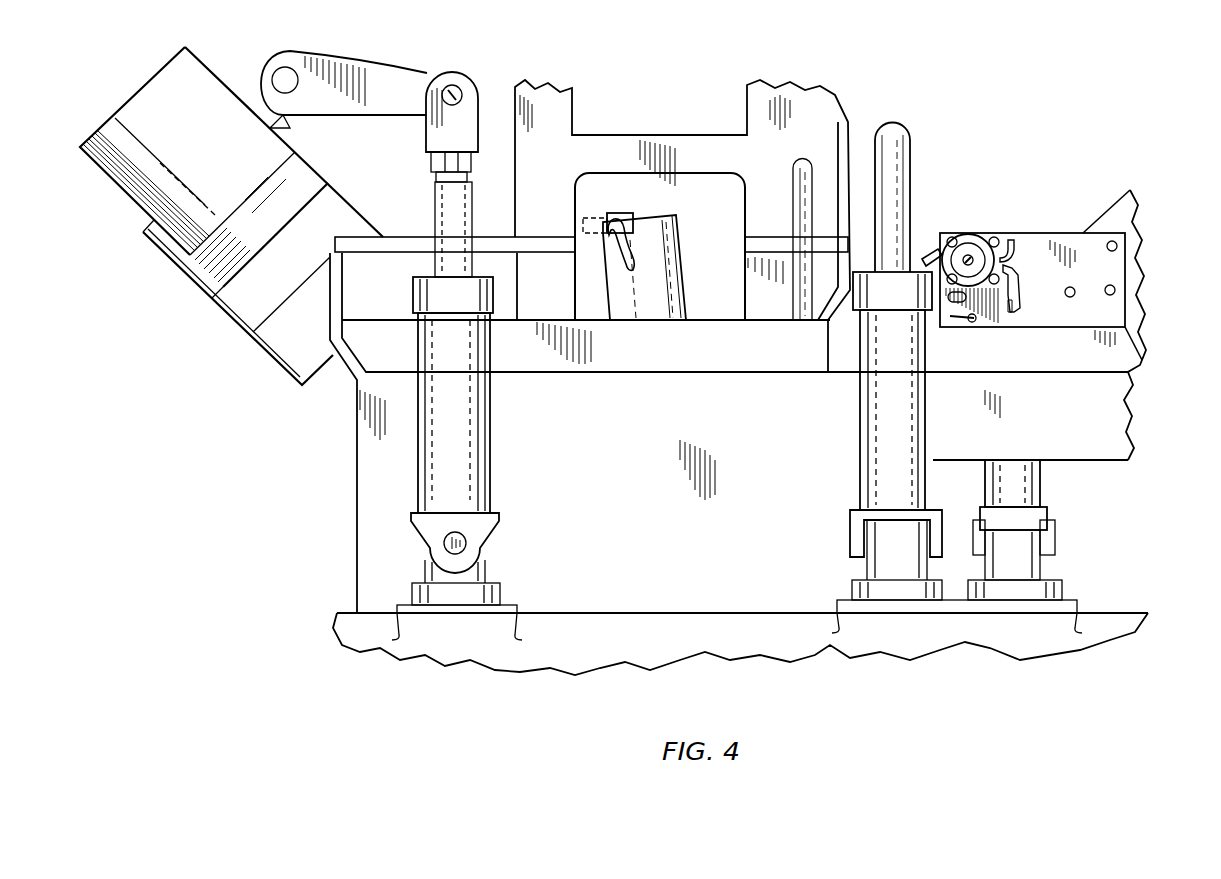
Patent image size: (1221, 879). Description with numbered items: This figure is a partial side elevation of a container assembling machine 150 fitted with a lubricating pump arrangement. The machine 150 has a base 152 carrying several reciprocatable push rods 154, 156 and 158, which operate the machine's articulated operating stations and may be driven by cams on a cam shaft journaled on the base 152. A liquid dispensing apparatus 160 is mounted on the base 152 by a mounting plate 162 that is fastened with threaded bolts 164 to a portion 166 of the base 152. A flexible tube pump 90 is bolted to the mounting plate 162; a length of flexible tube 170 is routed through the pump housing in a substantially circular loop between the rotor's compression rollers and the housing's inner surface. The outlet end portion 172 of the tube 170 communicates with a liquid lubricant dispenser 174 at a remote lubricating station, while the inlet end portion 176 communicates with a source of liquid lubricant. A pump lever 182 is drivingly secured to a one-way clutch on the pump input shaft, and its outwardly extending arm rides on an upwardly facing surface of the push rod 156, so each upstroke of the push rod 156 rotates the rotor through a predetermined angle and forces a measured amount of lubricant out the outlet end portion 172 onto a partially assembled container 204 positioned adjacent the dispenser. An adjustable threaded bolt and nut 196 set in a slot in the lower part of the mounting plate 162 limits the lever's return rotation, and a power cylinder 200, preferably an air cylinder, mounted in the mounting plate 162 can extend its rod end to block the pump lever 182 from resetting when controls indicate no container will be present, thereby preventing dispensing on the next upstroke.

The flexible tube pump 90 is at (962, 238).
The container assembling machine 150 is at (568, 74).
The base 152 is at (372, 550).
The push rod 154 is at (480, 446).
The push rod 156 is at (872, 462).
The push rod 158 is at (1042, 490).
The liquid dispensing apparatus 160 is at (1030, 172).
The mounting plate 162 is at (1052, 236).
The threaded bolts 164 is at (1108, 296).
The portion of the base 166 is at (1140, 206).
The flexible tube 170 is at (1018, 240).
The outlet end portion 172 is at (633, 262).
The liquid lubricant dispenser 174 is at (633, 223).
The inlet end portion 176 is at (1012, 306).
The pump lever 182 is at (928, 255).
The adjustable threaded bolt and nut 196 is at (956, 332).
The power cylinder 200 is at (948, 320).
The partially assembled container 204 is at (672, 280).